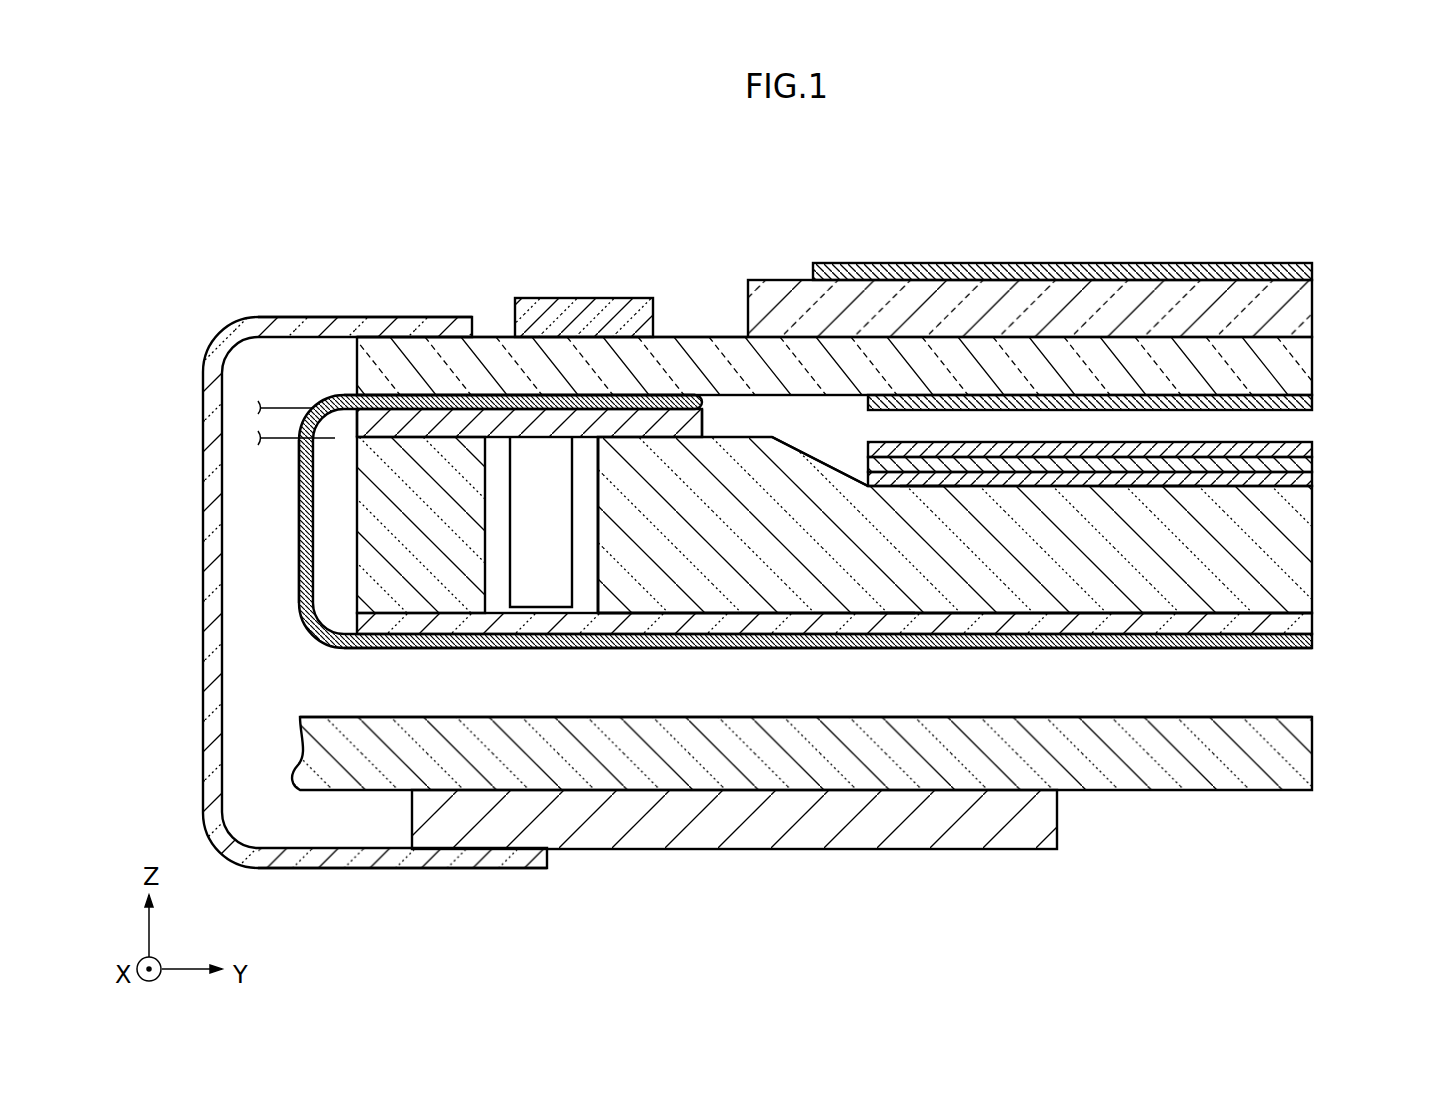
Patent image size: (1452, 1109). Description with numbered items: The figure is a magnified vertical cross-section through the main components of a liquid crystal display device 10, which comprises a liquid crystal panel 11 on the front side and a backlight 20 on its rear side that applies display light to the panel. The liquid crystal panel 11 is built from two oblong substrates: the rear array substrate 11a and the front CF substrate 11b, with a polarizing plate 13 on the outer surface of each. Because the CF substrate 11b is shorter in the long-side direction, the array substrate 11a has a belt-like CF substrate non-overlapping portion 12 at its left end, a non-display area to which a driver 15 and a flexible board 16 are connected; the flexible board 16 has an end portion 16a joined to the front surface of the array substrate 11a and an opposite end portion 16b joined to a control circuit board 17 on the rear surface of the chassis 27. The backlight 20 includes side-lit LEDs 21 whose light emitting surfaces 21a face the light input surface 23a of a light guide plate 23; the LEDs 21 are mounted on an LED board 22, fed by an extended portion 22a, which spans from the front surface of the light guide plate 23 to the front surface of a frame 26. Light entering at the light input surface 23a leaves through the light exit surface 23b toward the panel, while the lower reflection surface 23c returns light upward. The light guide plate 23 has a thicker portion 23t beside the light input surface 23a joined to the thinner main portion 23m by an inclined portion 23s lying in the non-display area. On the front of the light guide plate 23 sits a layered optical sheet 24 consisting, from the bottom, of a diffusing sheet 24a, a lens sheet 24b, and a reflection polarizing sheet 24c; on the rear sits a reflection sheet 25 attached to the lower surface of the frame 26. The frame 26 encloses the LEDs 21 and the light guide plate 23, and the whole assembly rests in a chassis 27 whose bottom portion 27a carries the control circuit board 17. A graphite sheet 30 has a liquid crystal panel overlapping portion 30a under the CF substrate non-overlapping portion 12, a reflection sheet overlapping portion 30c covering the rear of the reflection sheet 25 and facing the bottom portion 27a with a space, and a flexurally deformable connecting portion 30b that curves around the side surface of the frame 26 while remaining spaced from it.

The liquid crystal display device 10 is at (1142, 200).
The liquid crystal panel 11 is at (852, 284).
The array substrate 11a is at (1297, 368).
The CF substrate 11b is at (1298, 311).
The CF substrate non-overlapping portion 12 is at (493, 335).
The polarizing plate 13 is at (1250, 397).
The driver 15 is at (590, 318).
The flexible board 16 is at (210, 744).
The end portion 16a is at (440, 317).
The opposite end portion 16b is at (520, 860).
The control circuit board 17 is at (803, 827).
The backlight 20 is at (982, 873).
The LED 21 is at (577, 533).
The light emitting surface 21a is at (700, 403).
The LED board 22 is at (552, 478).
The extended portion 22a is at (278, 418).
The light guide plate 23 is at (1285, 547).
The light input surface 23a is at (688, 565).
The light exit surface 23b is at (930, 475).
The reflection surface 23c is at (897, 613).
The main portion 23m is at (1160, 588).
The inclined portion 23s is at (810, 457).
The thicker portion 23t is at (700, 612).
The optical sheet 24 is at (1160, 474).
The diffusing sheet 24a is at (1137, 500).
The lens sheet 24b is at (1308, 465).
The reflection polarizing sheet 24c is at (1305, 450).
The reflection sheet 25 is at (488, 623).
The frame 26 is at (383, 548).
The chassis 27 is at (802, 808).
The bottom portion 27a is at (1250, 780).
The graphite sheet 30 is at (717, 601).
The liquid crystal panel overlapping portion 30a is at (410, 398).
The connecting portion 30b is at (300, 482).
The reflection sheet overlapping portion 30c is at (418, 648).